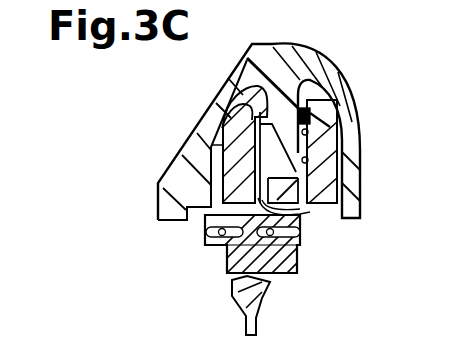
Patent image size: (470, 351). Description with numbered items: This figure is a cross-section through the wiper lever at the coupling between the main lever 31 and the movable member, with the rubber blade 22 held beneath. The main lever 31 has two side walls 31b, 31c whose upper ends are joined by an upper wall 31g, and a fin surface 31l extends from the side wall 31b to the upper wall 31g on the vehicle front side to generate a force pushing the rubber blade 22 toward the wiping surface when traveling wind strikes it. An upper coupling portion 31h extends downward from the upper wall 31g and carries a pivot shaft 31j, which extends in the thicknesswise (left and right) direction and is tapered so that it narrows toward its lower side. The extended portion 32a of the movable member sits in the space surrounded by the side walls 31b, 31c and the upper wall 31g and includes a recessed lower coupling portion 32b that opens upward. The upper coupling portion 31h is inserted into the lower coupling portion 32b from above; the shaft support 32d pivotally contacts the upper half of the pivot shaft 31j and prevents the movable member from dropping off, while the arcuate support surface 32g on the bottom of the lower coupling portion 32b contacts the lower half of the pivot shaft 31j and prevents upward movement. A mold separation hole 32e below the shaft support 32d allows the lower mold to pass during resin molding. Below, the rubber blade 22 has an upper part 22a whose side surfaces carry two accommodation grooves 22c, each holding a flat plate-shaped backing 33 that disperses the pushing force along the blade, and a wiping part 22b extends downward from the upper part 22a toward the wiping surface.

The main lever 31 is at (322, 57).
The upper wall 31g is at (287, 53).
The side wall 31b is at (168, 188).
The fin surface 31l is at (217, 107).
The side wall 31c is at (358, 190).
The upper coupling portion 31h is at (262, 129).
The pivot shaft 31j is at (255, 134).
The extended portion 32a is at (226, 98).
The shaft support 32d is at (343, 125).
The lower coupling portion 32b is at (333, 155).
The support surface 32g is at (340, 180).
The mold separation hole 32e is at (290, 212).
The rubber blade 22 is at (262, 298).
The upper part 22a is at (210, 226).
The accommodation groove 22c is at (222, 245).
The wiping part 22b is at (245, 318).
The backing 33 is at (213, 236).